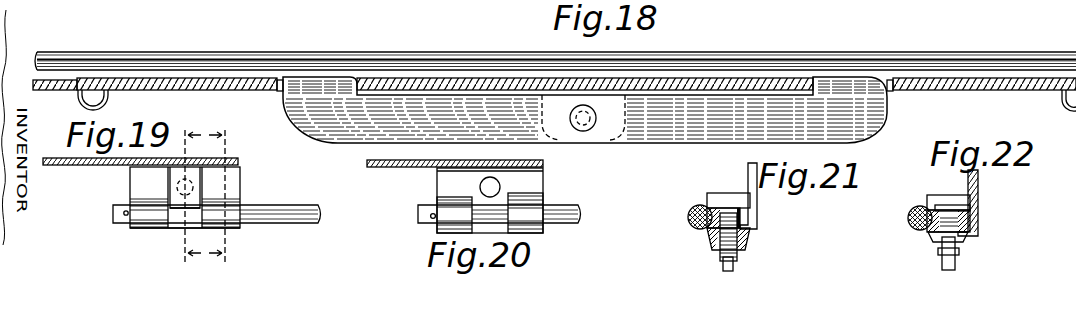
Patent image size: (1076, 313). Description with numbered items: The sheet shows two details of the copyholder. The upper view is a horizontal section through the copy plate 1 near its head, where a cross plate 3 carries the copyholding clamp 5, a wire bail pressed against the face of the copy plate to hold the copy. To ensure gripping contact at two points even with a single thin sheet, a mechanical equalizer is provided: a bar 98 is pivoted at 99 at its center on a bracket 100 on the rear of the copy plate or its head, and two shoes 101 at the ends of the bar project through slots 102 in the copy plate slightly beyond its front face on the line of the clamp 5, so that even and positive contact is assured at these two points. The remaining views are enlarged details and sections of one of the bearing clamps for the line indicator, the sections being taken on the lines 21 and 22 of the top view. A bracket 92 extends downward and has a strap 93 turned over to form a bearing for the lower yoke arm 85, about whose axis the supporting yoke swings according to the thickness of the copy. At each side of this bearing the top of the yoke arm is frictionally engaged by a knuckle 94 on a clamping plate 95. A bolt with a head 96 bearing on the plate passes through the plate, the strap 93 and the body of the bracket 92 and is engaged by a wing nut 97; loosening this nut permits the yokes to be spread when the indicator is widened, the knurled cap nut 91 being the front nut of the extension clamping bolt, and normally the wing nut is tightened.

In FIG. 18, the copy plate 1 is at (214, 80).
In FIG. 18, the cross plate 3 is at (168, 87).
In FIG. 18, the copyholding clamp 5 is at (703, 62).
In FIG. 18, the bar 98 is at (368, 130).
In FIG. 18, the shoes 101 is at (323, 82).
In FIG. 18, the slots 102 is at (279, 92).
In FIG. 18, the bracket 100 is at (540, 106).
In FIG. 18, the pivot 99 is at (596, 117).
In FIG. 19, the bracket 92 is at (130, 190).
In FIG. 20, the bracket 92 is at (437, 190).
In FIG. 21, the bracket 92 is at (748, 196).
In FIG. 22, the bracket 92 is at (979, 221).
In FIG. 19, the clamping plate 95 is at (239, 174).
In FIG. 20, the clamping plate 95 is at (536, 188).
In FIG. 21, the clamping plate 95 is at (707, 231).
In FIG. 19, the bolt head 96 is at (196, 166).
In FIG. 21, the bolt head 96 is at (735, 196).
In FIG. 22, the bolt head 96 is at (952, 202).
In FIG. 19, the knuckle 94 is at (233, 207).
In FIG. 20, the knuckle 94 is at (531, 218).
In FIG. 22, the knuckle 94 is at (927, 207).
In FIG. 19, the yoke arm 85 is at (298, 211).
In FIG. 20, the yoke arm 85 is at (579, 218).
In FIG. 21, the yoke arm 85 is at (689, 218).
In FIG. 22, the yoke arm 85 is at (907, 217).
In FIG. 19, the strap 93 is at (178, 222).
In FIG. 21, the strap 93 is at (698, 204).
In FIG. 22, the strap 93 is at (970, 208).
In FIG. 19, the section line 21— 21 is at (186, 192).
In FIG. 19, the section line 22— 22 is at (223, 193).
In FIG. 21, the knurled cap nut 91 is at (746, 240).
In FIG. 22, the wing nut 97 is at (937, 237).